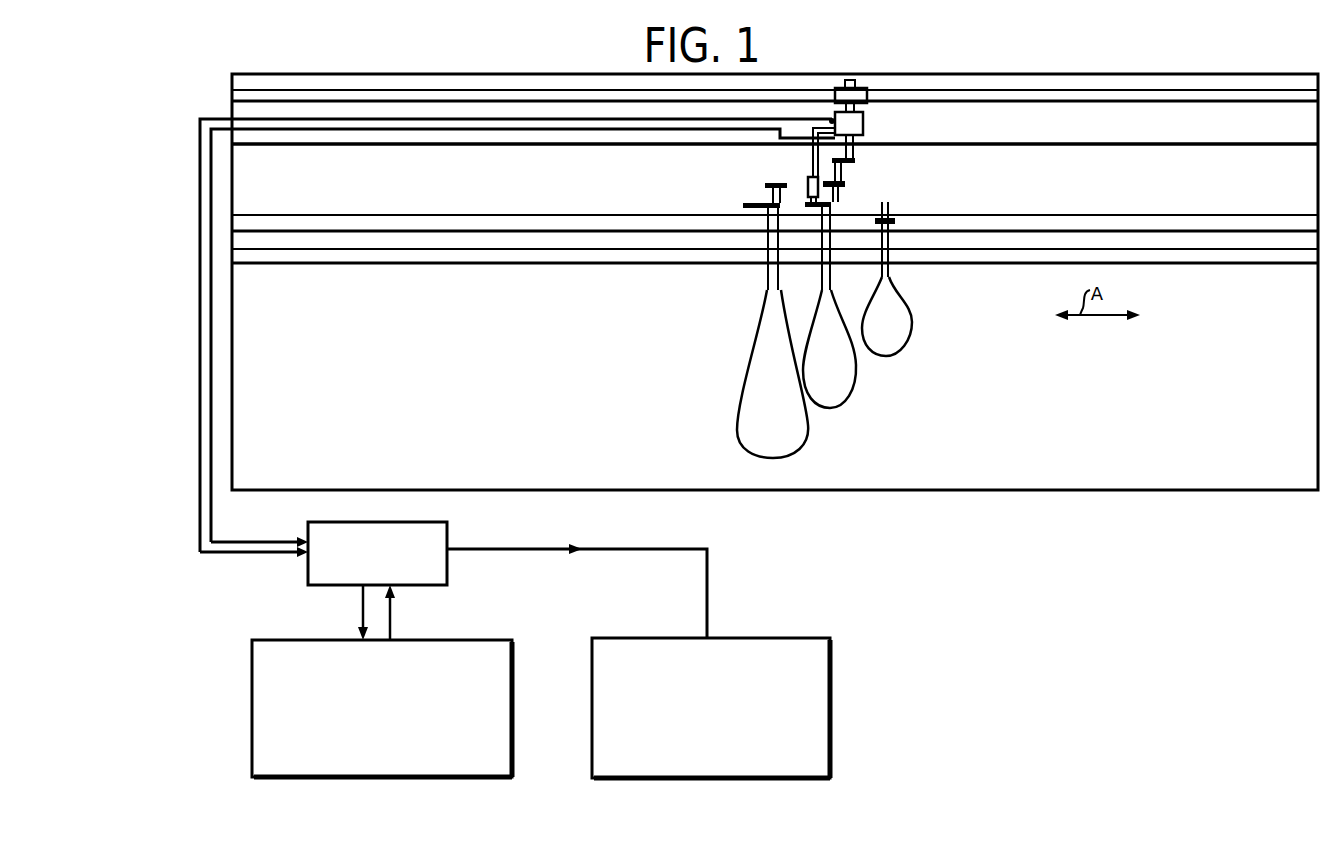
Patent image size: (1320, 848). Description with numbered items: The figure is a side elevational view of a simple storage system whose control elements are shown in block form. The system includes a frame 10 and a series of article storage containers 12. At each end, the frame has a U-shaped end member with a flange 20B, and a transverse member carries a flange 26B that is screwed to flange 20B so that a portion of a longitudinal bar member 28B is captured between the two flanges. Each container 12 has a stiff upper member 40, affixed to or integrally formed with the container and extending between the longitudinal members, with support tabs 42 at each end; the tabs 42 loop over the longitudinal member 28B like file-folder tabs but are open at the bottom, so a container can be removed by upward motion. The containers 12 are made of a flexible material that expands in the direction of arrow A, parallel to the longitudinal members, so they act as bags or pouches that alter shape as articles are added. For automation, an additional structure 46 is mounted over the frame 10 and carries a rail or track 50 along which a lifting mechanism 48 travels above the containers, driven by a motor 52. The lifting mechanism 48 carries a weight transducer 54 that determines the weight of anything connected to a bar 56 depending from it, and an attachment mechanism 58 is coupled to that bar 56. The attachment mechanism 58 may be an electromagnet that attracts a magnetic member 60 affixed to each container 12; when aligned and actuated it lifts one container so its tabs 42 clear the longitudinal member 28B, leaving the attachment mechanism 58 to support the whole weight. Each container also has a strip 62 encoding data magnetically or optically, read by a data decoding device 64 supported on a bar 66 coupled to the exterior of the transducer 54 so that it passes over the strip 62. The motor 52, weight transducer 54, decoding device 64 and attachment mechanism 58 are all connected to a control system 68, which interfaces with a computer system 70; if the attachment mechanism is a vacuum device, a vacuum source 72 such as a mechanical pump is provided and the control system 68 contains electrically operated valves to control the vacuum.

The frame 10 is at (310, 58).
The article storage containers 12 is at (904, 327).
The flange 20B is at (1218, 262).
The flange 26B is at (1192, 221).
The longitudinal bar member 28B is at (1090, 245).
The stiff upper member 40 is at (890, 226).
The support tabs 42 is at (893, 210).
The structure 46 is at (1186, 68).
The lifting mechanism 48 is at (886, 129).
The rail or track 50 is at (1032, 102).
The motor 52 is at (868, 92).
The weight transducer 54 is at (864, 140).
The bar 56 is at (843, 162).
The attachment mechanism 58 is at (886, 216).
The magnetic member 60 is at (838, 195).
The strip 62 is at (748, 202).
The data decoding device 64 is at (808, 188).
The bar 66 is at (811, 157).
The control system 68 is at (450, 530).
The computer system 70 is at (508, 640).
The vacuum source 72 is at (829, 640).